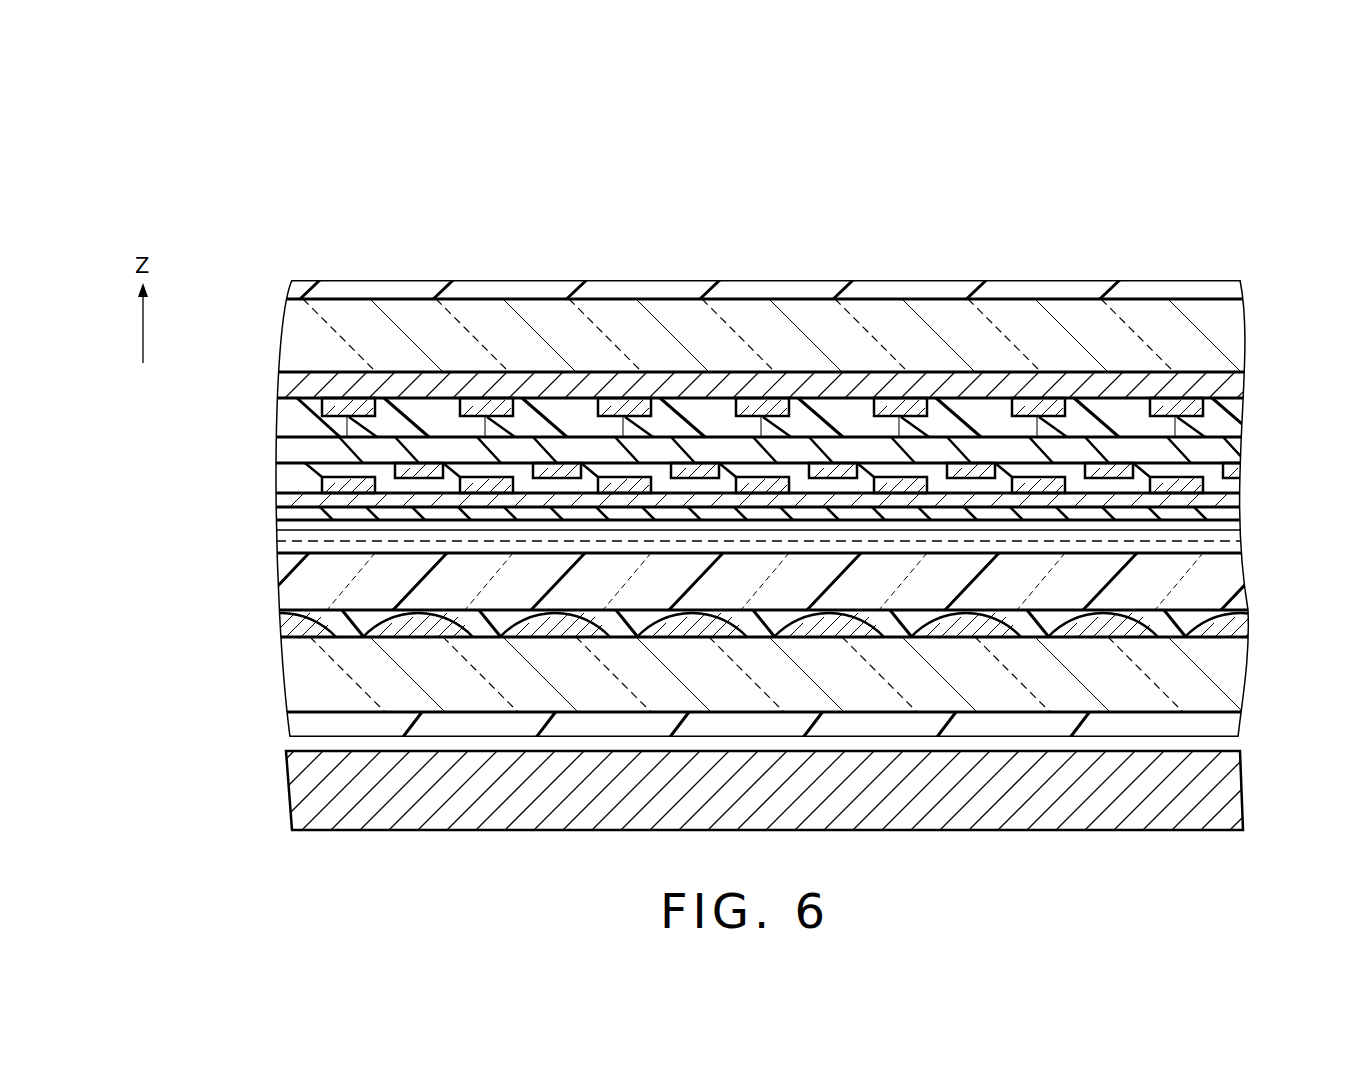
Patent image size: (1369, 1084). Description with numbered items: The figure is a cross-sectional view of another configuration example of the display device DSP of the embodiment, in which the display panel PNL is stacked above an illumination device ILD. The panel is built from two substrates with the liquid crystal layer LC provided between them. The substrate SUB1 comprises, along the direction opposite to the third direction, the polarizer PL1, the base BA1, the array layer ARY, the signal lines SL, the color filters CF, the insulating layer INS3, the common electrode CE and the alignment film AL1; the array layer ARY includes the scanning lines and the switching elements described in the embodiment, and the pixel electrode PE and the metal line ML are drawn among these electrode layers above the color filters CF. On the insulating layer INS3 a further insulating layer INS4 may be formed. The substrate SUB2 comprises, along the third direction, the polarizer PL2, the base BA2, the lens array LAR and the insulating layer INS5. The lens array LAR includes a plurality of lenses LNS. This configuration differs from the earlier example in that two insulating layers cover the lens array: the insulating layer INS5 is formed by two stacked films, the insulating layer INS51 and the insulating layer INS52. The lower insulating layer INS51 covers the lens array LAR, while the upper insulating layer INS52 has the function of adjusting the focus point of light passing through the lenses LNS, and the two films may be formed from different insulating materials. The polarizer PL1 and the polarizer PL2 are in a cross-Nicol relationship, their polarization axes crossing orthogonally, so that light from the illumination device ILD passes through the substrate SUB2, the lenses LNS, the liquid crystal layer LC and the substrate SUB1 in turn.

The display device DSP is at (1028, 146).
The display panel PNL is at (1108, 246).
The polarizer PL1 is at (295, 289).
The base BA1 is at (290, 333).
The signal lines SL is at (300, 380).
The array layer ARY is at (292, 390).
The color filters CF is at (292, 418).
The insulating layer INS3 is at (290, 450).
The pixel electrode PE is at (400, 466).
The metal line ML is at (322, 492).
The common electrode CE is at (318, 506).
The insulating layer INS4 is at (1195, 503).
The alignment film AL1 is at (1200, 530).
The liquid crystal layer LC is at (290, 541).
The insulating layer INS5 is at (133, 548).
The insulating layer INS52 is at (292, 578).
The insulating layer INS51 is at (320, 608).
The lenses LNS is at (290, 631).
The lens array LAR is at (1135, 636).
The base BA2 is at (292, 678).
The polarizer PL2 is at (292, 724).
The illumination device ILD is at (292, 782).
The substrate SUB1 is at (1258, 300).
The substrate SUB2 is at (1258, 557).